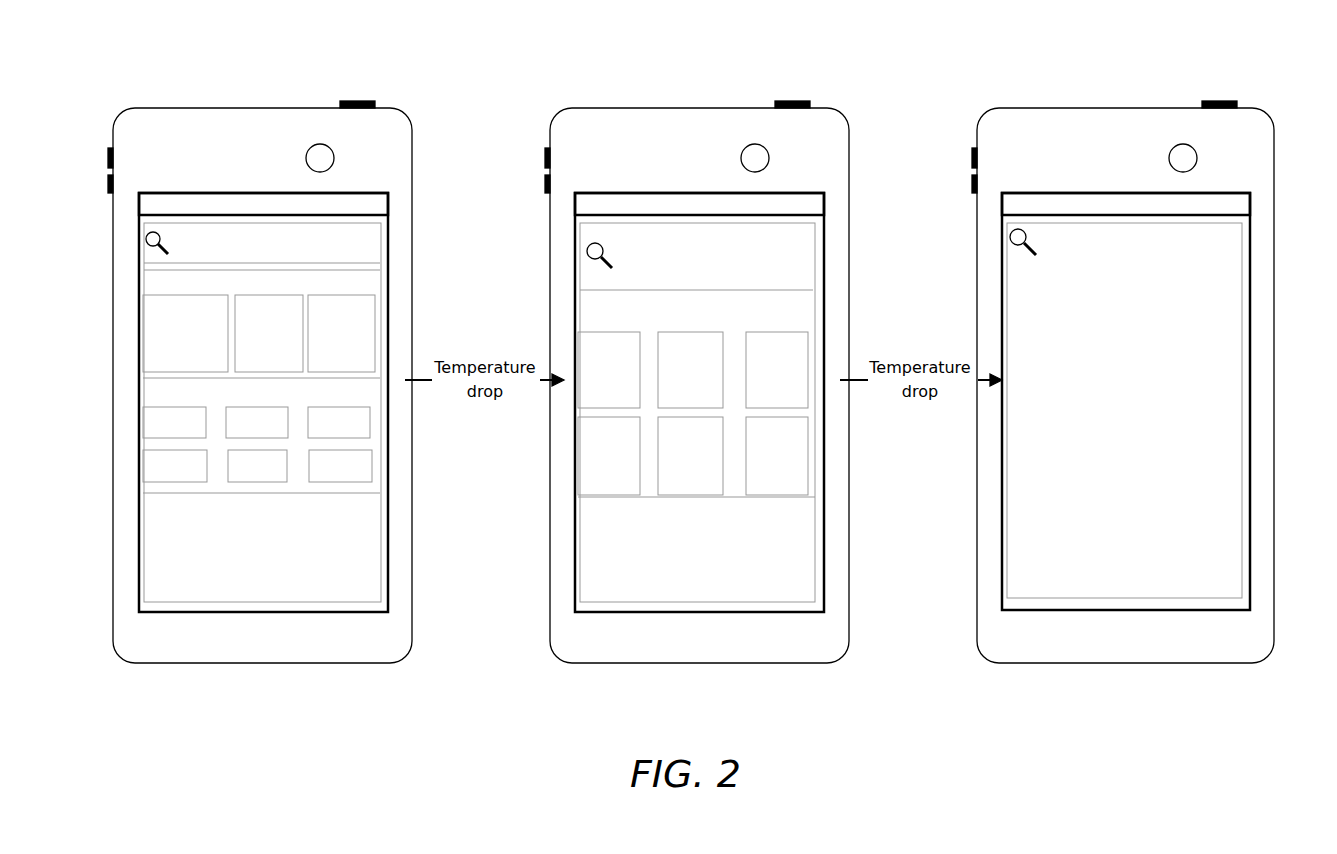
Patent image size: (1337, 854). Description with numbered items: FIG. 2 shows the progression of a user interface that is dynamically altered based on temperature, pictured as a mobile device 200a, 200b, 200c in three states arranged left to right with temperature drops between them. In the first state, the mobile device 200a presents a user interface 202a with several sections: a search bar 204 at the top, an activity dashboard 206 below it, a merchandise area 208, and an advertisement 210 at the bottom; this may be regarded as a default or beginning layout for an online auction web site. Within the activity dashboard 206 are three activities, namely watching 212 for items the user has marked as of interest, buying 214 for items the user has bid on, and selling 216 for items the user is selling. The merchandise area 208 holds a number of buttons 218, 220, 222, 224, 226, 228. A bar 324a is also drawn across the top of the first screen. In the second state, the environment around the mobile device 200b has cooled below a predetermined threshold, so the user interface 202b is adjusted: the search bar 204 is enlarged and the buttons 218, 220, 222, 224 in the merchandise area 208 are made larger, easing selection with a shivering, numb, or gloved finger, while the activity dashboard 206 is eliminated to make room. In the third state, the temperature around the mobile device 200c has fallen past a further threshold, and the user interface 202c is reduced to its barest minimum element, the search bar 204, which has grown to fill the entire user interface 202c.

The mobile device 200a is at (278, 108).
The mobile device 200b is at (680, 108).
The mobile device 200c is at (1120, 108).
The user interface 202a is at (390, 210).
The user interface 202b is at (822, 210).
The user interface 202c is at (1250, 210).
The search bar 204 is at (380, 245).
The activity dashboard 206 is at (287, 329).
The merchandise area 208 is at (377, 435).
The advertisement 210 is at (380, 550).
The watching 212 is at (165, 350).
The buying 214 is at (272, 355).
The selling 216 is at (360, 305).
The button 218 is at (170, 462).
The button 220 is at (263, 457).
The button 222 is at (343, 485).
The button 224 is at (135, 427).
The button 226 is at (265, 423).
The button 228 is at (377, 422).
The status bar 324a is at (175, 213).